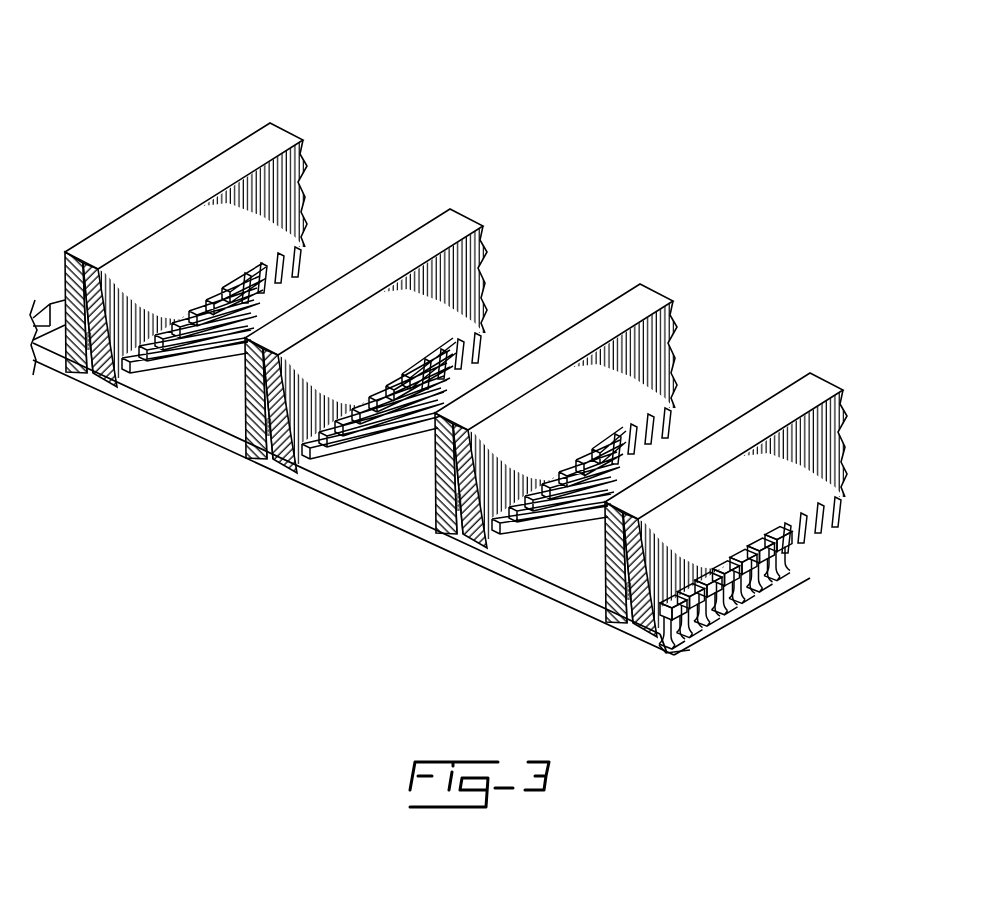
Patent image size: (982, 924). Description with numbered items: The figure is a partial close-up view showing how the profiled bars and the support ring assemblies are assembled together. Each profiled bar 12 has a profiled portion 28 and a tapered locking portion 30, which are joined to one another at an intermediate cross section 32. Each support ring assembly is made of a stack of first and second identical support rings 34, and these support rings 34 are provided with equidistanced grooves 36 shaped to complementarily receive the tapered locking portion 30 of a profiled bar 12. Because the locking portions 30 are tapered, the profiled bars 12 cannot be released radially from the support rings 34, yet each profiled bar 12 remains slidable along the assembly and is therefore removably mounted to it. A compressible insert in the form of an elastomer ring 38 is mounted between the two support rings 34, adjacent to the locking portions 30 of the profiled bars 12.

The profiled bar 12 is at (727, 617).
The profiled portion 28 is at (704, 652).
The tapered locking portion 30 is at (797, 553).
The intermediate cross section 32 is at (667, 650).
The support ring 34 is at (183, 193).
The groove 36 is at (292, 258).
The elastomer ring 38 is at (80, 380).